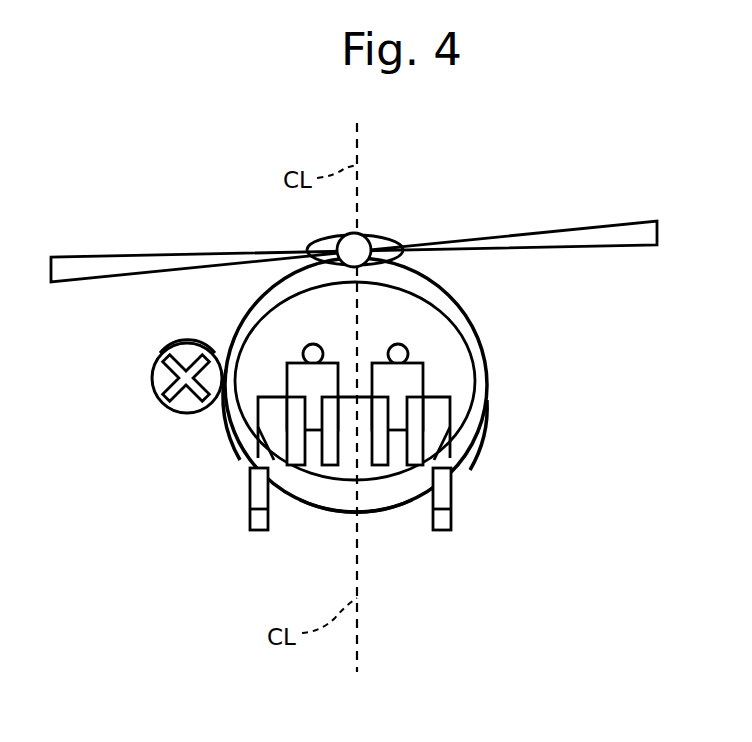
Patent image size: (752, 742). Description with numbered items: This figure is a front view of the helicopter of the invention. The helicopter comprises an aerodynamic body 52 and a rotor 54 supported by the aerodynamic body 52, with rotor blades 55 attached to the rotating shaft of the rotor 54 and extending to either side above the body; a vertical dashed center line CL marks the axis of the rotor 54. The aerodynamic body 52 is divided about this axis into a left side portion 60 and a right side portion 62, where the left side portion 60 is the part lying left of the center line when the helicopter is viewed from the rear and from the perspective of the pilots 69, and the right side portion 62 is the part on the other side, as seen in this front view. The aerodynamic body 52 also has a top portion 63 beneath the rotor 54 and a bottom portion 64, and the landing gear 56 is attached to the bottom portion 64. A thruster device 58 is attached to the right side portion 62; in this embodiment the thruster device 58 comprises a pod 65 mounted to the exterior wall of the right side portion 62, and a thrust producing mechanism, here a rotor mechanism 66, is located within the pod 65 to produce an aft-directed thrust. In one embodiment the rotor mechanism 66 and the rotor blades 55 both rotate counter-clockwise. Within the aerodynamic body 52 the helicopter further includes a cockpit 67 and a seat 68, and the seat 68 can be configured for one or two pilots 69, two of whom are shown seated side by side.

The aerodynamic body 52 is at (489, 380).
The rotor 54 is at (366, 238).
The rotor blades 55 is at (523, 232).
The landing gear 56 is at (253, 500).
The thruster device 58 is at (177, 350).
The left side portion 60 is at (487, 413).
The right side portion 62 is at (221, 413).
The top portion 63 is at (420, 265).
The bottom portion 64 is at (412, 500).
The pod 65 is at (152, 368).
The rotor mechanism 66 is at (203, 360).
The cockpit 67 is at (440, 342).
The seat 68 is at (233, 437).
The pilots 69 is at (383, 362).